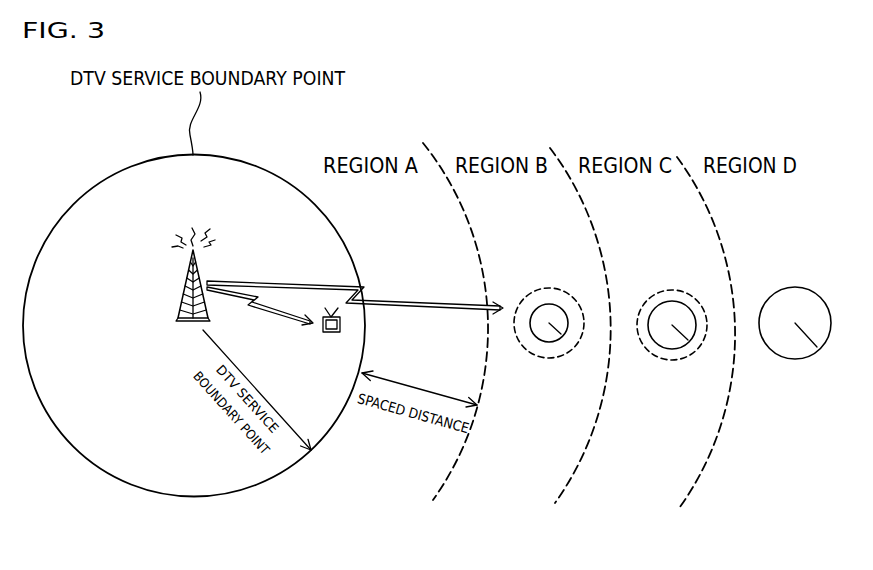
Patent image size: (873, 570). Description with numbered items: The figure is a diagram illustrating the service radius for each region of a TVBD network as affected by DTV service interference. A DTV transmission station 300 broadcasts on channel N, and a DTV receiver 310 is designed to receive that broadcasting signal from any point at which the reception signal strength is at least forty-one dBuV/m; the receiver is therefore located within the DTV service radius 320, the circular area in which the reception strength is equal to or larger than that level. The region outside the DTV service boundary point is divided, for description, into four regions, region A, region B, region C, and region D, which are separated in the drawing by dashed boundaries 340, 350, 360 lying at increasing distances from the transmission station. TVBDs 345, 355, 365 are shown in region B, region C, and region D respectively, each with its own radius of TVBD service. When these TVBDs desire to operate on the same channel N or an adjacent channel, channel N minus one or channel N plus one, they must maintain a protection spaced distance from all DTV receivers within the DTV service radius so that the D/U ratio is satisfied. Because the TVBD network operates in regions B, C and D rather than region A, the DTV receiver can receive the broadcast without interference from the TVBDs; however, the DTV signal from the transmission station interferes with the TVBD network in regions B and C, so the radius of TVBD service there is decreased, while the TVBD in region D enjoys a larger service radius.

The DTV transmission station 300 is at (178, 284).
The DTV receiver 310 is at (320, 326).
The DTV service radius 320 is at (335, 228).
The Region A/B boundary 340 is at (463, 205).
The TVBD 345 is at (549, 288).
The Region B/C boundary 350 is at (584, 208).
The TVBD 355 is at (672, 290).
The Region C/D boundary 360 is at (710, 211).
The TVBD 365 is at (793, 287).